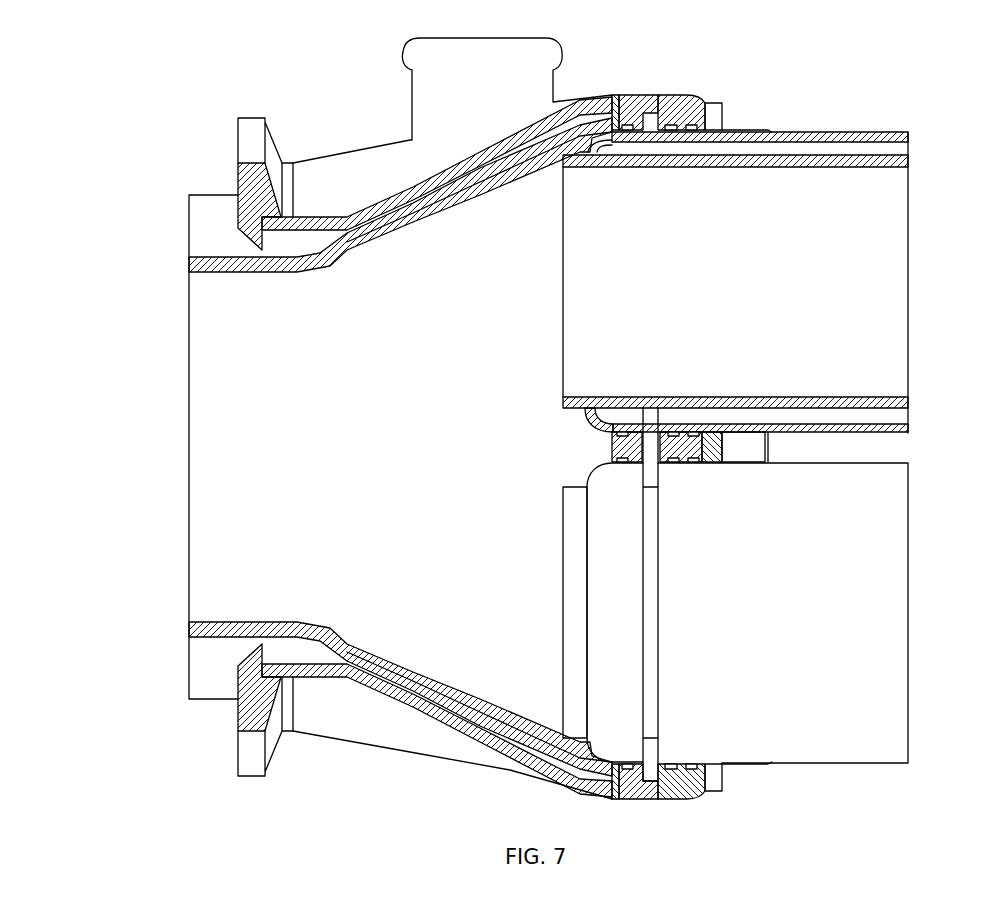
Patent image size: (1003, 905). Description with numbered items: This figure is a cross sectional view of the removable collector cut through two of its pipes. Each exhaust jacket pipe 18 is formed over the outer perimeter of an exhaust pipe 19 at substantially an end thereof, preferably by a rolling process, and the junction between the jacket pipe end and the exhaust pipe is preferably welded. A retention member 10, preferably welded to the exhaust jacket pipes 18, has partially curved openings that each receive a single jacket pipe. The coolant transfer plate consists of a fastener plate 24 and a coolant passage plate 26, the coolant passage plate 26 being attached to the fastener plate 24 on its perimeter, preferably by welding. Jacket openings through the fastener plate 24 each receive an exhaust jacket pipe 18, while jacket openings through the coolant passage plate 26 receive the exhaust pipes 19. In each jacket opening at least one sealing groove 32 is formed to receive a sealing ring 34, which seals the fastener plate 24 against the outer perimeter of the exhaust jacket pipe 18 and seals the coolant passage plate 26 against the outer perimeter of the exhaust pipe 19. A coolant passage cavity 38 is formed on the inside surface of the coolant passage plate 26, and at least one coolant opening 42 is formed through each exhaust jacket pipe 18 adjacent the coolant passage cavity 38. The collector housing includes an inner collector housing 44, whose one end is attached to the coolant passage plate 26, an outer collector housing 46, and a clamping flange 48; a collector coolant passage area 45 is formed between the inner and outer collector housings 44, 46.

The retention member 10 is at (713, 102).
The exhaust jacket pipe 18 is at (808, 133).
The exhaust pipe 19 is at (826, 397).
The fastener plate 24 is at (687, 97).
The coolant passage plate 26 is at (624, 118).
The sealing groove 32 is at (618, 115).
The sealing ring 34 is at (615, 800).
The coolant passage cavity 38 is at (650, 443).
The coolant opening 42 is at (650, 600).
The inner collector housing 44 is at (210, 257).
The collector coolant passage area 45 is at (470, 723).
The outer collector housing 46 is at (322, 217).
The clamping flange 48 is at (252, 140).